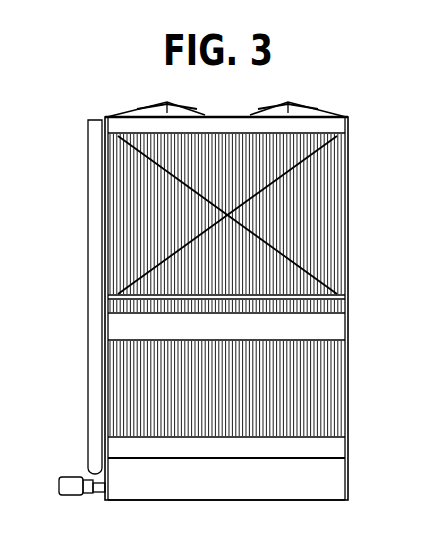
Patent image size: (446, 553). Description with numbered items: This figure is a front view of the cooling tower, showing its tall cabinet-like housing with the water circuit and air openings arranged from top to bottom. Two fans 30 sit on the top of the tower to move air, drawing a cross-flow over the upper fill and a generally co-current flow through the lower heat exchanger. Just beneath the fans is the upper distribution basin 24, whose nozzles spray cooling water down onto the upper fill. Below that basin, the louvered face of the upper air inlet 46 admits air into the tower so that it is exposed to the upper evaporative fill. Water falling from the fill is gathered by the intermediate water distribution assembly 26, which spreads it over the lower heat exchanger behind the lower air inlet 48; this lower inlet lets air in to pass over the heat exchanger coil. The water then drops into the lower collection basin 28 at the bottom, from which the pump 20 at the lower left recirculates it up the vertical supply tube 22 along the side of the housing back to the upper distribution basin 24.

The pump 20 is at (59, 484).
The vertical supply tube 22 is at (87, 257).
The upper distribution basin 24 is at (340, 125).
The intermediate water distribution assembly 26 is at (342, 308).
The lower collection basin 28 is at (340, 477).
The fans 30 is at (250, 115).
The upper air inlet 46 is at (328, 205).
The lower air inlet 48 is at (328, 373).